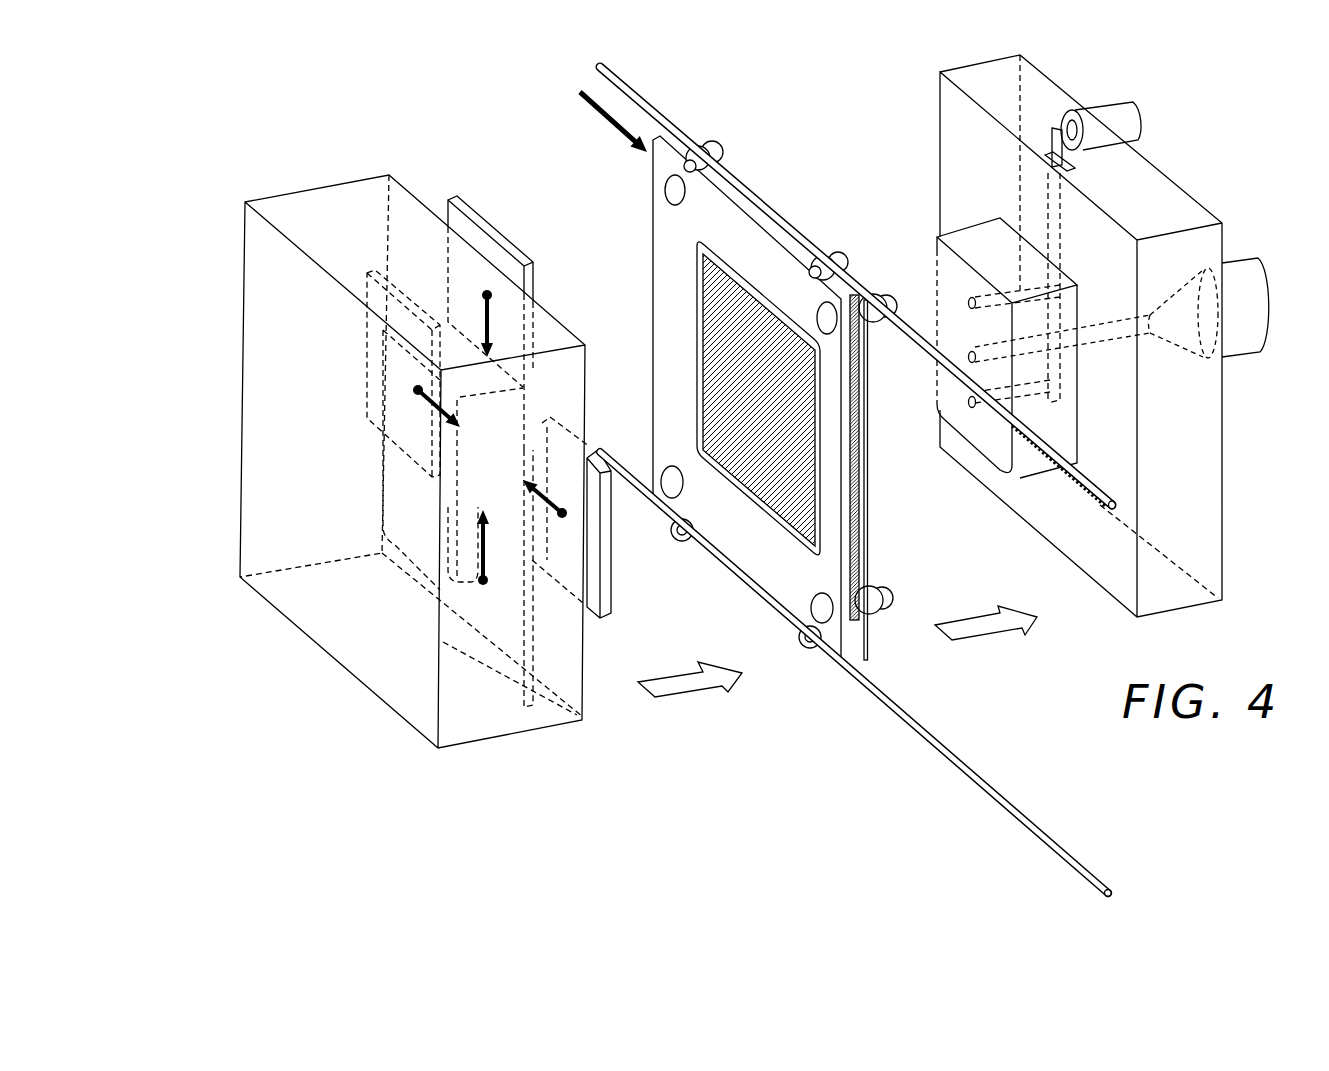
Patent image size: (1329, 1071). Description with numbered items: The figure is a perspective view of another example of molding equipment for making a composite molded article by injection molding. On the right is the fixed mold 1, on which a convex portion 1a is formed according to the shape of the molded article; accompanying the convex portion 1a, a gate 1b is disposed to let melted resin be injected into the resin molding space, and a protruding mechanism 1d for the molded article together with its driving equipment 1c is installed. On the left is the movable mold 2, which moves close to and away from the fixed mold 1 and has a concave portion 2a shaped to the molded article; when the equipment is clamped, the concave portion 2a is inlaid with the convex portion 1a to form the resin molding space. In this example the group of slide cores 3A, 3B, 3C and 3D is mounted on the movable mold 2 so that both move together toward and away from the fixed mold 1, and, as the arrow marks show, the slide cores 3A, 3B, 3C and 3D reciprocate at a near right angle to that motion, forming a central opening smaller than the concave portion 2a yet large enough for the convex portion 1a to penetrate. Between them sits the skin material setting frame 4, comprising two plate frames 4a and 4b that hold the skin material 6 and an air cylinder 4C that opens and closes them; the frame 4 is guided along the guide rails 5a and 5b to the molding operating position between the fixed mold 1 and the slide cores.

The fixed mold 1 is at (1045, 86).
The convex portion 1a is at (984, 234).
The gate 1b is at (970, 303).
The driving equipment 1c is at (1135, 114).
The protruding mechanism 1d is at (970, 356).
The movable mold 2 is at (305, 207).
The concave portion 2a is at (503, 418).
The slide core 3A is at (486, 215).
The slide core 3B is at (607, 563).
The slide core 3C is at (503, 672).
The slide core 3D is at (395, 322).
The skin material setting frame 4 is at (873, 555).
The plate frame 4a is at (833, 642).
The plate frame 4b is at (862, 648).
The air cylinder 4C is at (884, 599).
The guide rail 5a is at (619, 83).
The guide rail 5b is at (952, 758).
The skin material 6 is at (743, 487).